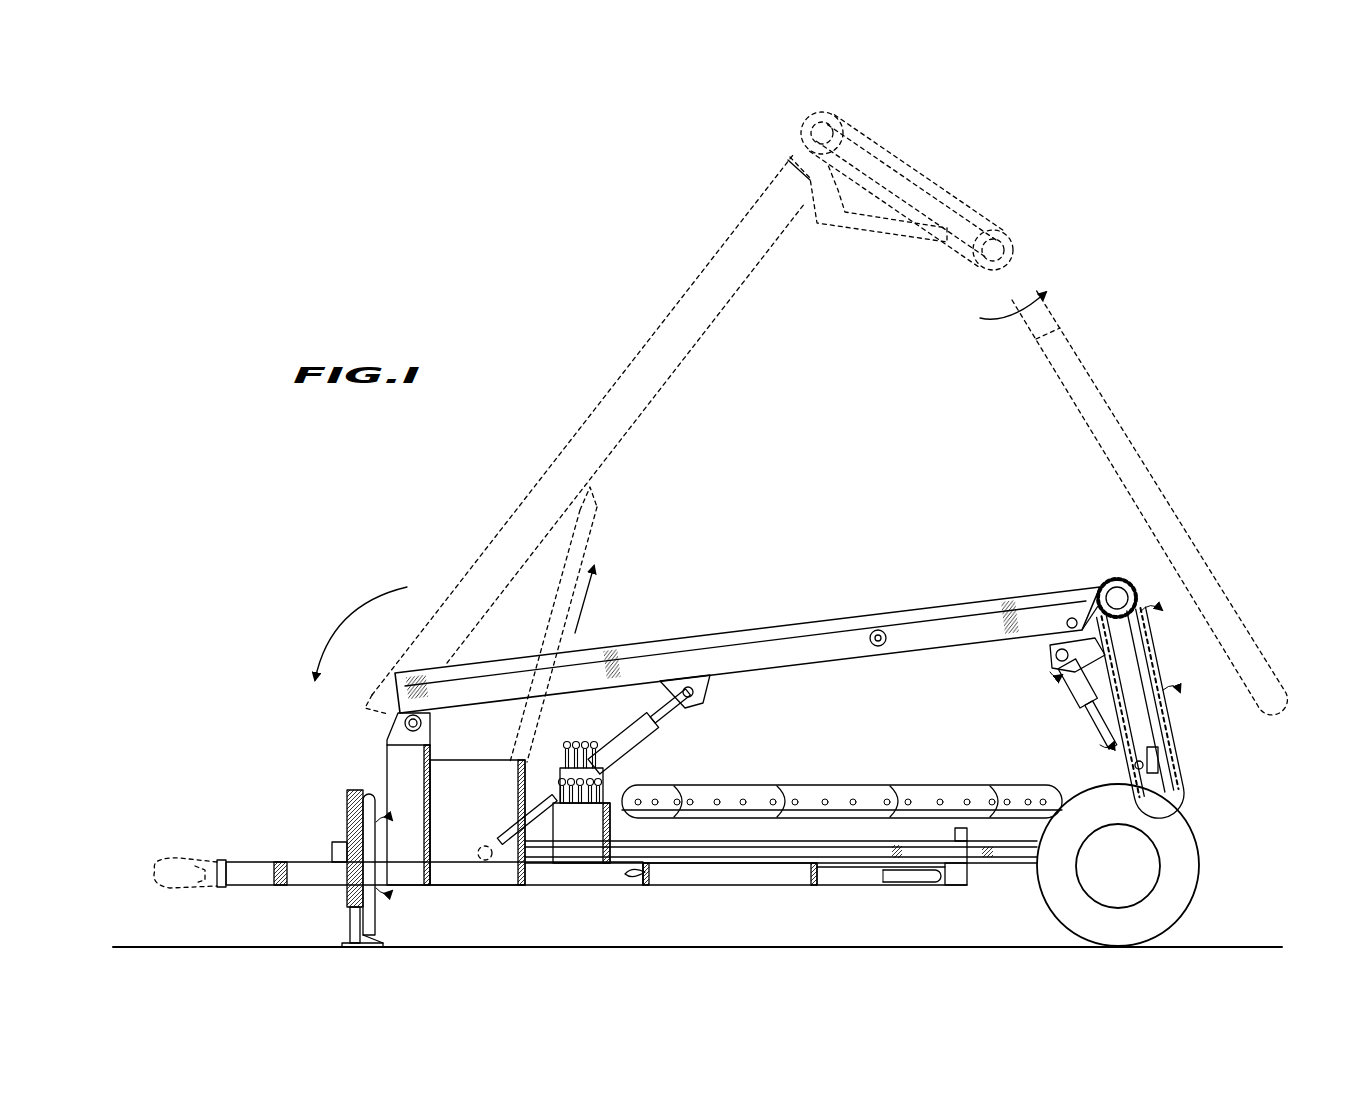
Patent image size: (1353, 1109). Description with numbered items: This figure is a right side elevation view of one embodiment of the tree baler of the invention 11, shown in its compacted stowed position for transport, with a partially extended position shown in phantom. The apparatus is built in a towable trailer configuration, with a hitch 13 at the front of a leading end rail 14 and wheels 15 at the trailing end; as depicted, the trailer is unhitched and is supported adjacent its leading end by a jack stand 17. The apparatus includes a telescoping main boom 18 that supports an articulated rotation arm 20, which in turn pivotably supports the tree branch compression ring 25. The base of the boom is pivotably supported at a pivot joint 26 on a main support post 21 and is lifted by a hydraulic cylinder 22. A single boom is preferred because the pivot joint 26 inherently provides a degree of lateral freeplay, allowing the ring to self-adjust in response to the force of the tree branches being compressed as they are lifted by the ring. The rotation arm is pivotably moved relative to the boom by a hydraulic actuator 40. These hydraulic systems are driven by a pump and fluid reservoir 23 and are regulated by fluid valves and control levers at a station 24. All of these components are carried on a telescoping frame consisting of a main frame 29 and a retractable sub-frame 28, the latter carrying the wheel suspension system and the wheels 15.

The tree baler 11 is at (420, 502).
The hitch 13 is at (178, 853).
The leading end rail 14 is at (277, 862).
The wheels 15 is at (1190, 842).
The jack stand 17 is at (358, 788).
The telescoping main boom 18 is at (903, 612).
The articulated rotation arm 20 is at (1130, 720).
The main support post 21 is at (407, 835).
The hydraulic cylinder 22 is at (535, 718).
The pump and fluid reservoir 23 is at (477, 822).
The station 24 is at (578, 823).
The tree branch compression ring 25 is at (862, 785).
The pivot joint 26 is at (398, 720).
The retractable sub-frame 28 is at (972, 870).
The main frame 29 is at (743, 862).
The hydraulic actuator 40 is at (867, 233).